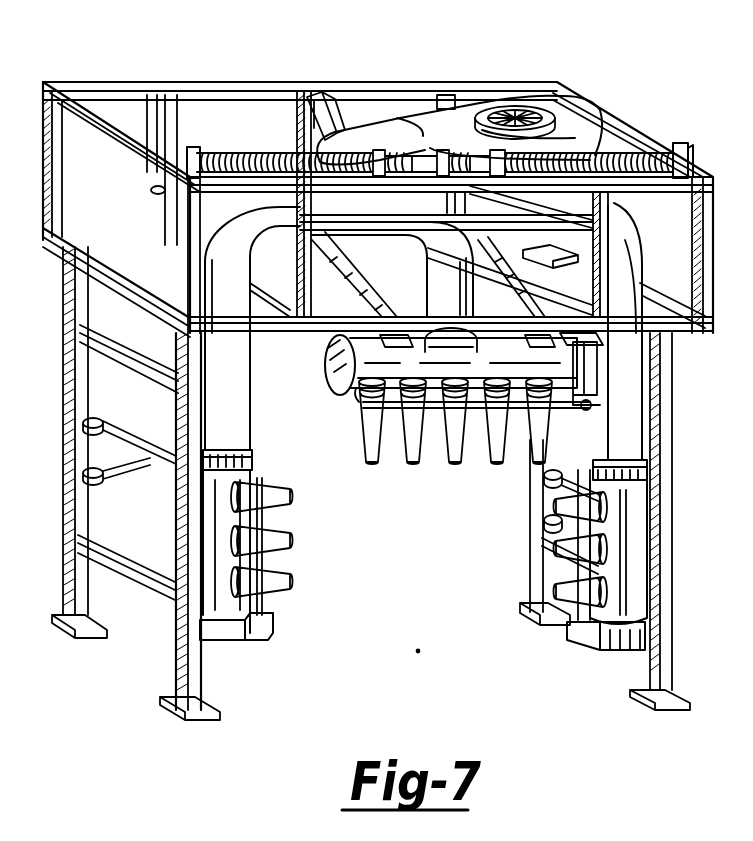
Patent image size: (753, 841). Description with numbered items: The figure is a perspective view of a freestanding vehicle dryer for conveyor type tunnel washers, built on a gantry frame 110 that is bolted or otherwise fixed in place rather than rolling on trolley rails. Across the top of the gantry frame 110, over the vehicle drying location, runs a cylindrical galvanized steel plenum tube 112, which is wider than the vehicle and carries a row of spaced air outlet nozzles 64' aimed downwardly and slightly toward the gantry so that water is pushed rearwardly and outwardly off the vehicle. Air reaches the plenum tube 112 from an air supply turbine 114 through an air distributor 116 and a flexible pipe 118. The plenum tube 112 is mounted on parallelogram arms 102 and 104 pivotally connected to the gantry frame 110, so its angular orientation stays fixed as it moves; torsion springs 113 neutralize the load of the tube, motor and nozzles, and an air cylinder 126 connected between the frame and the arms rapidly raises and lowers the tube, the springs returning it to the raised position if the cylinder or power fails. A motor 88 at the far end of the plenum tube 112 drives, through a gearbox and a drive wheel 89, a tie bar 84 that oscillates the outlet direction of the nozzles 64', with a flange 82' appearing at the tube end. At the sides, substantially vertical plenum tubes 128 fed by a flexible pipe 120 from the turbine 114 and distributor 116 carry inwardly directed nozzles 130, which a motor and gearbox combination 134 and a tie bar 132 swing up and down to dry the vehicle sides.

The gantry frame 110 is at (130, 80).
The torsion springs 113 is at (648, 153).
The air cylinder 126 is at (343, 120).
The air distributor 116 is at (400, 130).
The air supply turbine 114 is at (560, 140).
The flexible pipe 120 is at (620, 266).
The flexible pipe 118 is at (436, 294).
The parallelogram arm 102 is at (365, 289).
The parallelogram arm 104 is at (515, 292).
The plenum tube 112 is at (338, 368).
The flange 82' is at (324, 403).
The air outlet nozzles 64' is at (432, 421).
The tie bar 84 is at (431, 410).
The motor 88 is at (588, 372).
The drive wheel 89 is at (595, 405).
The vertically mounted plenum tube 128 is at (240, 606).
The inwardly directed nozzles 130 is at (275, 540).
The tie bar 132 is at (272, 567).
The motor and gearbox combination 134 is at (257, 638).